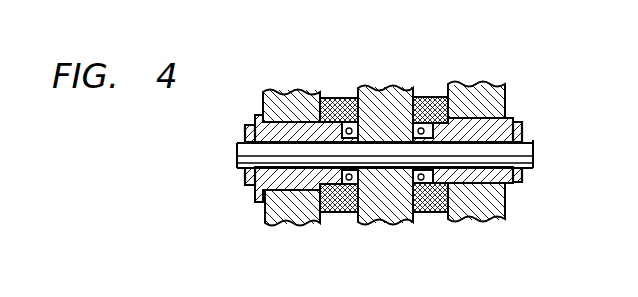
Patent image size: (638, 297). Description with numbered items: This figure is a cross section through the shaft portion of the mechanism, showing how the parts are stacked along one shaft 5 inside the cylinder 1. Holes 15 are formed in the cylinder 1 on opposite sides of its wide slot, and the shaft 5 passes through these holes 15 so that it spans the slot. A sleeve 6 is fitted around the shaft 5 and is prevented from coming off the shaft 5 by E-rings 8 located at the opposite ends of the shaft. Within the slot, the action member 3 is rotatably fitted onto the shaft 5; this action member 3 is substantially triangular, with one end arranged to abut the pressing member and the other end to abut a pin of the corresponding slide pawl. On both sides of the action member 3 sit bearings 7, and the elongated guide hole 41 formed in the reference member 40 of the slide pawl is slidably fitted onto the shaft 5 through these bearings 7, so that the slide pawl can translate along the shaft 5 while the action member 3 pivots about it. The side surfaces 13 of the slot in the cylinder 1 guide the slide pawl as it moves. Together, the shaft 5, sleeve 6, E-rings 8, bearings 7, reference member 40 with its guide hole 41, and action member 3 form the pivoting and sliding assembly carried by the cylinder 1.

The cylinder 1 is at (283, 97).
The action member 3 is at (371, 223).
The shaft 5 is at (238, 152).
The sleeve 6 is at (263, 198).
The bearing 7 is at (372, 133).
The E-ring 8 is at (247, 181).
The side surface 13 is at (328, 90).
The hole 15 is at (293, 195).
The reference member 40 is at (333, 212).
The elongated guide hole 41 is at (428, 183).